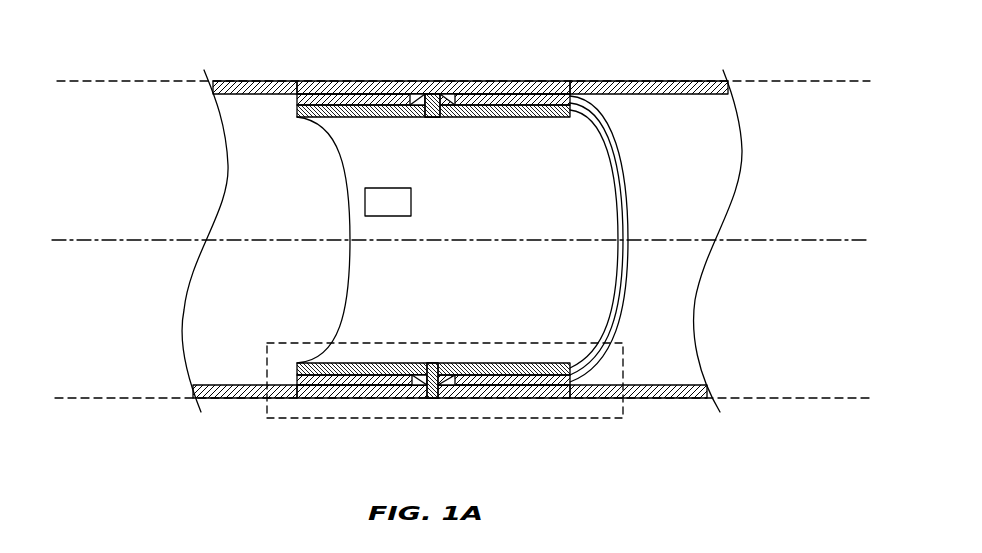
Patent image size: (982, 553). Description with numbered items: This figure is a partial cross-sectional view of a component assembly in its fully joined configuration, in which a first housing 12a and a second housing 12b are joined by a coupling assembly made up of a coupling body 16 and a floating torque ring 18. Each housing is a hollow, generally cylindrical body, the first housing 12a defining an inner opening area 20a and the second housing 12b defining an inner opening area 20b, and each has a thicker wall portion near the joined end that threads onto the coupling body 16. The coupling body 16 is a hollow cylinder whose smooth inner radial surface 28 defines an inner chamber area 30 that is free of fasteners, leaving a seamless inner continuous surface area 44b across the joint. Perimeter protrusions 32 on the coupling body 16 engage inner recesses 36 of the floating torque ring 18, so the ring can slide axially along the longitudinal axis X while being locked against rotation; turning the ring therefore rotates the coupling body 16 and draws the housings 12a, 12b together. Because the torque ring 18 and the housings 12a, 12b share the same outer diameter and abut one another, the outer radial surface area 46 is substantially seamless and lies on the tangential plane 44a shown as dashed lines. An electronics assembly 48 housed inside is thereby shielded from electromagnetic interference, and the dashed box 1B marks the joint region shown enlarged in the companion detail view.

The plane 44a is at (96, 80).
The inner continuous surface area 44b is at (499, 126).
The first housing 12a is at (229, 80).
The second housing 12b is at (531, 80).
The inner opening area 20a is at (253, 133).
The inner opening area 20b is at (693, 147).
The inner recesses 36 is at (412, 94).
The perimeter protrusions 32 is at (437, 94).
The floating torque ring 18 is at (455, 94).
The outer radial surface area 46 is at (425, 72).
The inner chamber area 30 is at (578, 188).
The coupling body 16 is at (580, 140).
The electronics assembly 48 is at (365, 203).
The inner radial surface 28 is at (579, 316).
The longitudinal axis X is at (795, 243).
The detail view region 1B is at (590, 419).